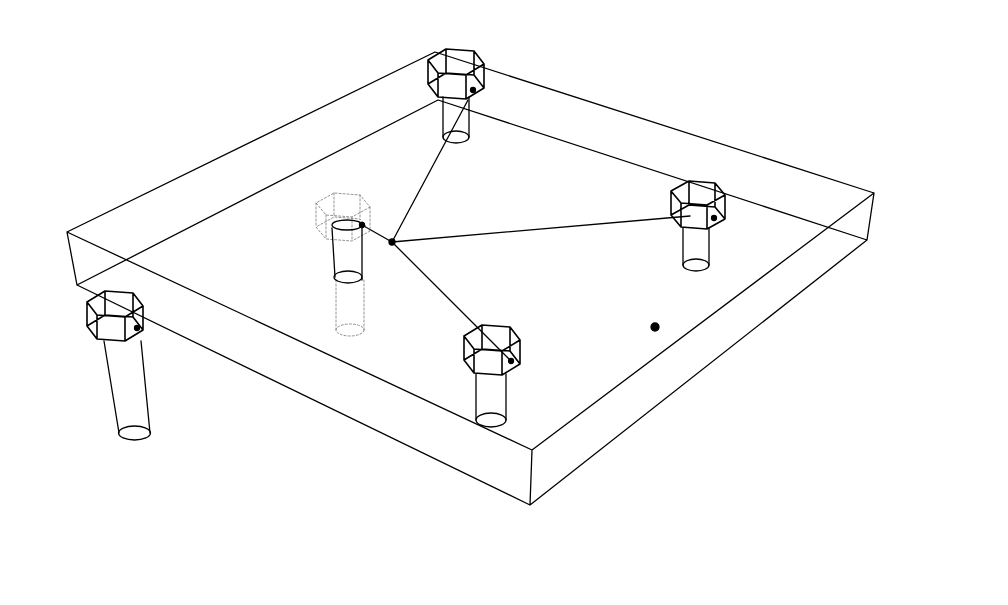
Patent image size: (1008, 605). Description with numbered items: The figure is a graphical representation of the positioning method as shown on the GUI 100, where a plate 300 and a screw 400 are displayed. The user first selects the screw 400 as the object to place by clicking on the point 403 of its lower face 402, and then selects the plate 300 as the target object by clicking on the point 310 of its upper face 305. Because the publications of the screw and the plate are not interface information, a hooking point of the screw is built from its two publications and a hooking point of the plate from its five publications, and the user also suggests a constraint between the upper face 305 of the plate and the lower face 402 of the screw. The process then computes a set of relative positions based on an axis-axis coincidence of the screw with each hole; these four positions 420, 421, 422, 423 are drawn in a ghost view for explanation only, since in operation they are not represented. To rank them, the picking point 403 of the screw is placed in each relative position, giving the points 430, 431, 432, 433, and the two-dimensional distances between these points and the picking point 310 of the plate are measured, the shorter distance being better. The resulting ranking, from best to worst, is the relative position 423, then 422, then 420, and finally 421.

The GUI 100 is at (195, 480).
The plate 300 is at (640, 115).
The face 305 is at (658, 330).
The point 310 is at (395, 245).
The screw 400 is at (123, 373).
The face 402 is at (95, 330).
The point 403 is at (140, 327).
The relative position 420 is at (432, 86).
The relative position 421 is at (712, 193).
The relative position 422 is at (467, 358).
The relative position 423 is at (343, 197).
The point 430 is at (484, 66).
The point 431 is at (722, 216).
The point 432 is at (522, 368).
The point 433 is at (362, 225).